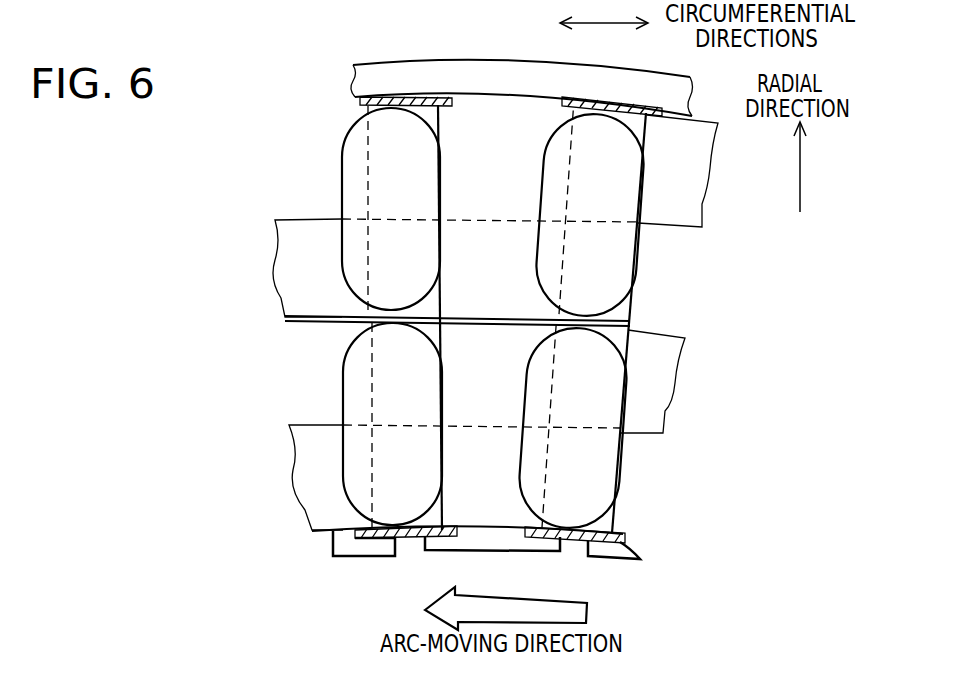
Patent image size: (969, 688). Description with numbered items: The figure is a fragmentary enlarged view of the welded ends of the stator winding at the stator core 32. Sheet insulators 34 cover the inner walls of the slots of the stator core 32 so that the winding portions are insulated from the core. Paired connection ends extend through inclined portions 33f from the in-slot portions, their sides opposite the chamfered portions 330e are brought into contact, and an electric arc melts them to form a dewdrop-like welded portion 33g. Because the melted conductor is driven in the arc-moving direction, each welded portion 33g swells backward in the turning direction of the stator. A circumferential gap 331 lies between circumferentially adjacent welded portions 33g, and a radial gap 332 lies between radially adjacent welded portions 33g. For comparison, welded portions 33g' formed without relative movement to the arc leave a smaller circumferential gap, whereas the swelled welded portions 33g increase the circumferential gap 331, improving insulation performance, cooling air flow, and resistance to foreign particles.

The stator core 32 is at (475, 72).
The sheet insulator 34 is at (388, 96).
The inclined portion 33f is at (302, 262).
The welded portion 33g is at (327, 317).
The welded portion 33g' is at (640, 321).
The chamfered portion 330e is at (433, 300).
The circumferential gap 331 is at (483, 365).
The radial gap 332 is at (362, 323).